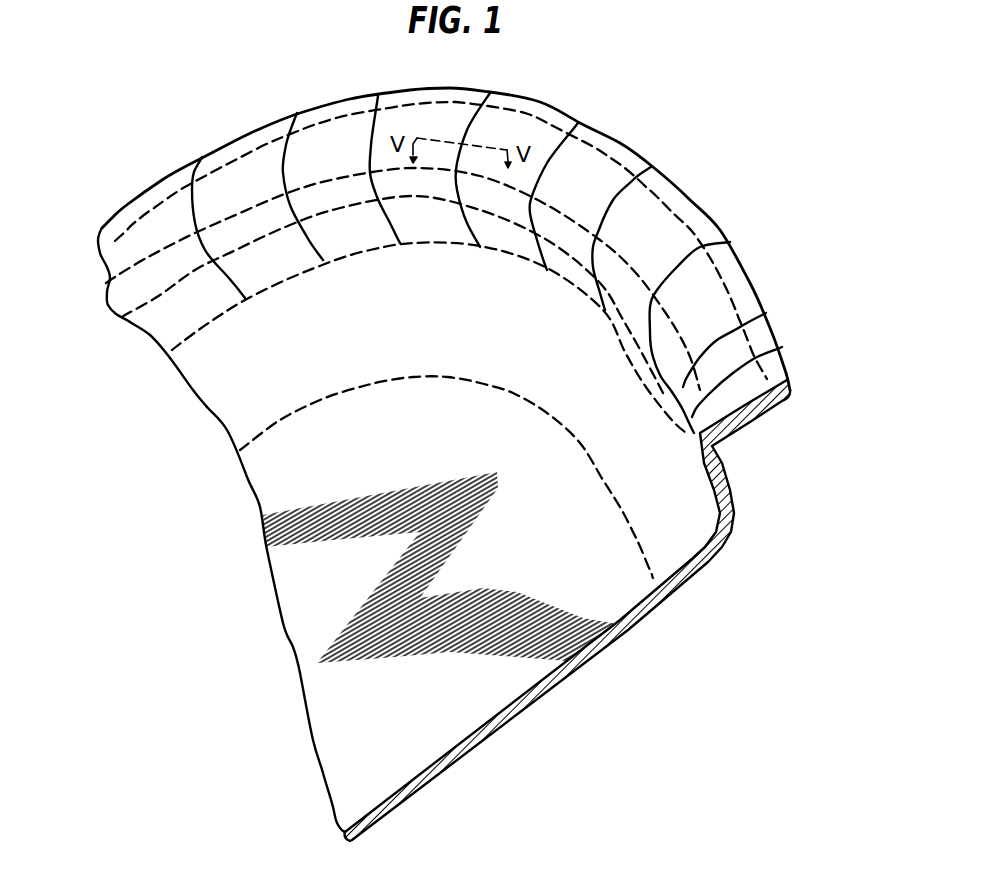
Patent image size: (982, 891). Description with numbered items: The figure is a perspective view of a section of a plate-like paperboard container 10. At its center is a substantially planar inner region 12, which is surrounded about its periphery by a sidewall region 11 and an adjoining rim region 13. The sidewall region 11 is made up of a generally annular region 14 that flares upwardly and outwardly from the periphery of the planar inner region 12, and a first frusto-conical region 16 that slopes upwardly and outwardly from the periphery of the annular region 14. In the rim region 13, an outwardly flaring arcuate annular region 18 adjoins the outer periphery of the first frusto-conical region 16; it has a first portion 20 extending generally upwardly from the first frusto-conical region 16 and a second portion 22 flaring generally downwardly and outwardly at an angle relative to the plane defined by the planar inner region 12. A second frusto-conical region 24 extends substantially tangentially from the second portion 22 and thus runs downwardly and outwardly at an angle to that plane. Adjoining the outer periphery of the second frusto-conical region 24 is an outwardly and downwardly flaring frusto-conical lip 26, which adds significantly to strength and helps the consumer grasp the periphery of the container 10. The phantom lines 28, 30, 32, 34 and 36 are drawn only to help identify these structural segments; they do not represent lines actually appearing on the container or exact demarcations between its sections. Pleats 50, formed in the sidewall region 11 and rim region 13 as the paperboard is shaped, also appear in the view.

The container 10 is at (706, 182).
The sidewall region 11 is at (174, 395).
The planar inner region 12 is at (292, 641).
The rim region 13 is at (761, 416).
The annular region 14 is at (205, 406).
The first frusto-conical region 16 is at (150, 340).
The arcuate annular region 18 is at (112, 318).
The first portion 20 is at (124, 322).
The second portion 22 is at (103, 300).
The second frusto-conical region 24 is at (102, 266).
The frusto-conical lip 26 is at (764, 294).
The phantom line 28 is at (500, 384).
The phantom line 30 is at (371, 253).
The phantom line 32 is at (377, 202).
The phantom line 34 is at (334, 180).
The phantom line 36 is at (342, 118).
The pleats 50 is at (286, 183).